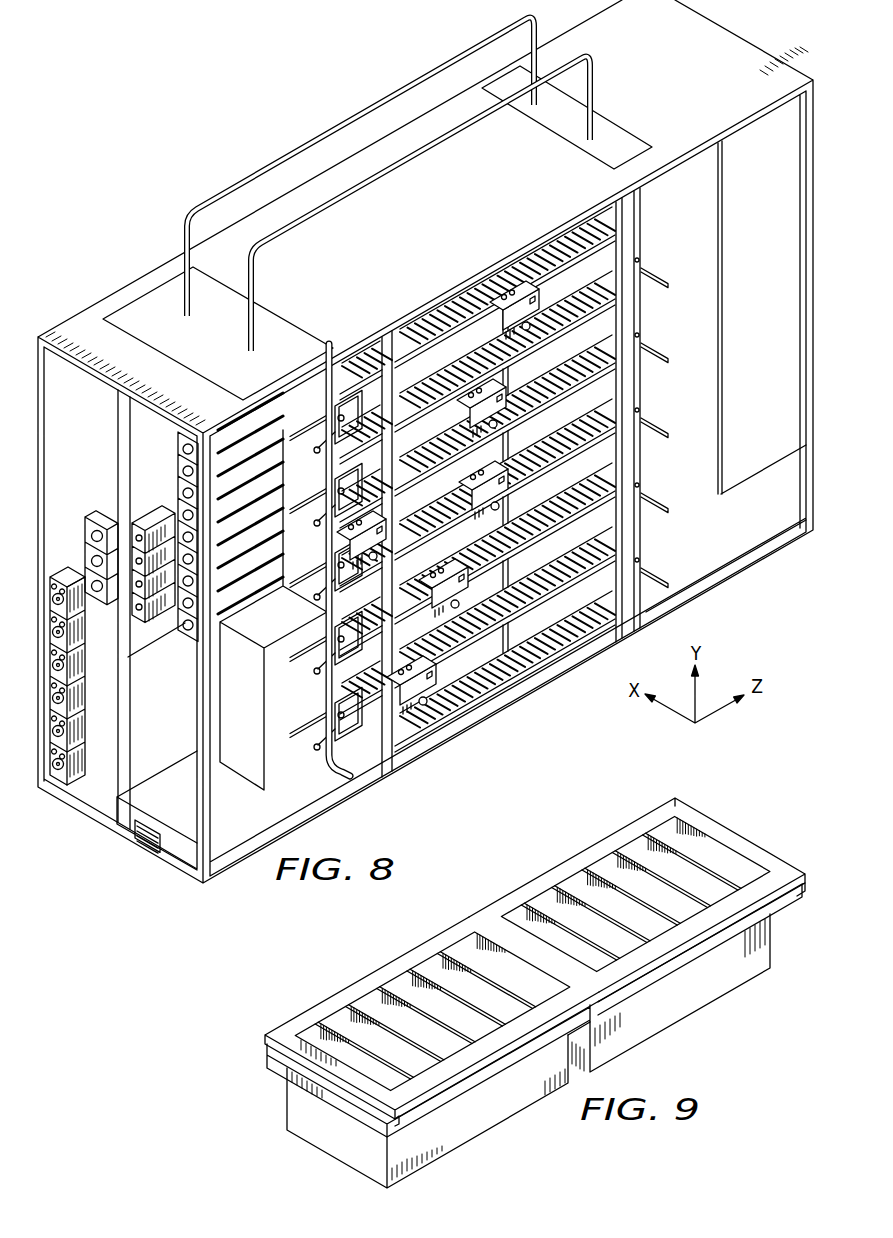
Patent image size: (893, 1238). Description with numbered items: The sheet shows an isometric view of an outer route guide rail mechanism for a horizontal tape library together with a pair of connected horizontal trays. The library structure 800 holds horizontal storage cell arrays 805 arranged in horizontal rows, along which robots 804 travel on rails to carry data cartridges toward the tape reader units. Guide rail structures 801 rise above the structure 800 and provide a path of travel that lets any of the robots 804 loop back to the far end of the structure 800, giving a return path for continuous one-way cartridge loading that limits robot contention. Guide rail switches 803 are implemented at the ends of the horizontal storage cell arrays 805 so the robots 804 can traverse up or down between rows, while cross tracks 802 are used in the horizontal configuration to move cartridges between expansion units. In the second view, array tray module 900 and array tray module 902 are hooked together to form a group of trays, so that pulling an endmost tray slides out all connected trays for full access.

In FIG. 8, the structure 800 is at (106, 292).
In FIG. 8, the guide rail structures 801 is at (365, 109).
In FIG. 8, the cross tracks 802 is at (656, 272).
In FIG. 8, the guide rail switches 803 is at (322, 676).
In FIG. 8, the robots 804 is at (443, 696).
In FIG. 8, the horizontal storage cell arrays 805 is at (532, 676).
In FIG. 9, the array tray module 900 is at (468, 1127).
In FIG. 9, the array tray module 902 is at (670, 1010).